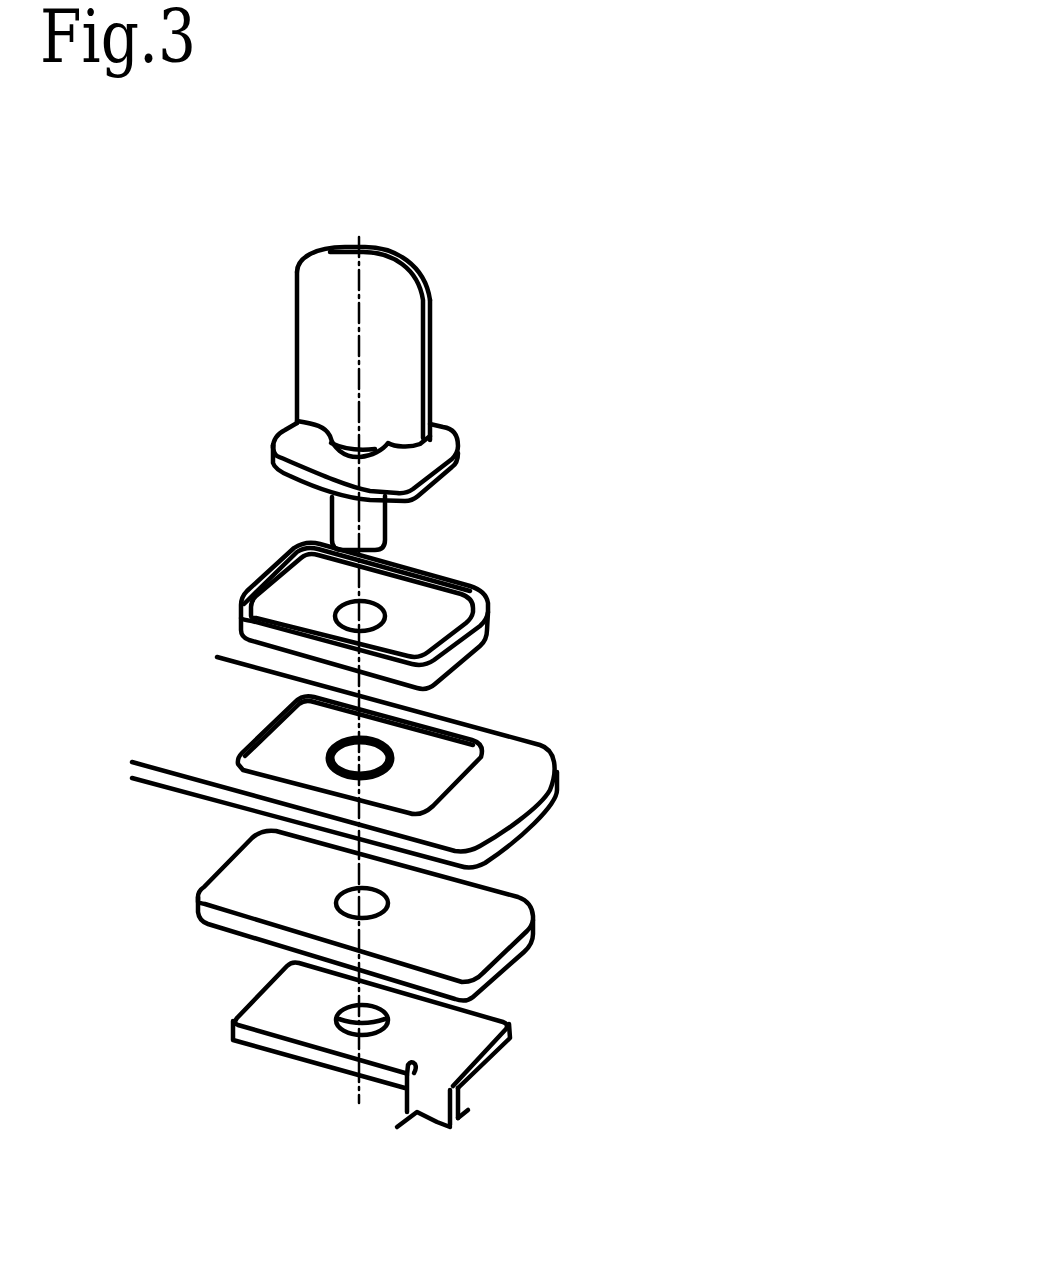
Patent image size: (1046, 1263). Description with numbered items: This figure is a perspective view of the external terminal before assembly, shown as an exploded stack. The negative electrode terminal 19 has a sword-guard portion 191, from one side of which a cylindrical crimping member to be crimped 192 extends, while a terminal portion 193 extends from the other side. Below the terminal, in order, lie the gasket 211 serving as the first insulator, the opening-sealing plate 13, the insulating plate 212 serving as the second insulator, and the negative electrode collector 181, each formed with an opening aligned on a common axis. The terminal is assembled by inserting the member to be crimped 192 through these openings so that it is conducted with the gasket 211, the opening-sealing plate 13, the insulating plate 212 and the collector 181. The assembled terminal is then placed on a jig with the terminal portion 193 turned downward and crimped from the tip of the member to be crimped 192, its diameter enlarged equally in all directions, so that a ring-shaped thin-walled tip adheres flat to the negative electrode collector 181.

The negative electrode terminal 19 is at (546, 398).
The terminal portion 193 is at (393, 347).
The sword-guard portion 191 is at (438, 450).
The cylindrical crimping member to be crimped 192 is at (365, 532).
The gasket 211 is at (483, 627).
The opening-sealing plate 13 is at (483, 787).
The insulating plate 212 is at (460, 940).
The negative electrode collector 181 is at (447, 1050).